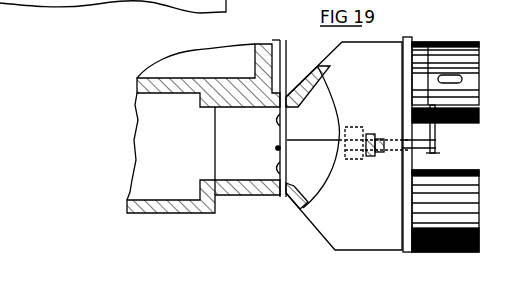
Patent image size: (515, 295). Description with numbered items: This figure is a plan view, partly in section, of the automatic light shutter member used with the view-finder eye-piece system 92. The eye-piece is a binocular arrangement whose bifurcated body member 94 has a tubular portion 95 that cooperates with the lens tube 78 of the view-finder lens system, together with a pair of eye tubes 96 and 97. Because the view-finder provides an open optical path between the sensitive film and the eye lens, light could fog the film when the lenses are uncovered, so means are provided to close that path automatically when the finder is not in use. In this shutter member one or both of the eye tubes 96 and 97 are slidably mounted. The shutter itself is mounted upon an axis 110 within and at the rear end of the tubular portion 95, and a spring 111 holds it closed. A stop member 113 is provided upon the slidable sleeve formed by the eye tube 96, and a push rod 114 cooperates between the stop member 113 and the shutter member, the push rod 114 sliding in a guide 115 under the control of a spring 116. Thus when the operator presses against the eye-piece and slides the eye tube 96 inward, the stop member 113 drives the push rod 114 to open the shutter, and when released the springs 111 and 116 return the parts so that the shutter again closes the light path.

The lens tube 78 is at (172, 66).
The eye-piece system 92 is at (297, 229).
The bifurcated body member 94 is at (313, 73).
The tubular portion 95 is at (242, 107).
The eye tube 96 is at (452, 42).
The eye tube 97 is at (435, 253).
The axis 110 is at (276, 148).
The spring 111 is at (277, 155).
The stop member 113 is at (449, 123).
The push rod 114 is at (305, 141).
The guide 115 is at (351, 157).
The spring 116 is at (380, 138).